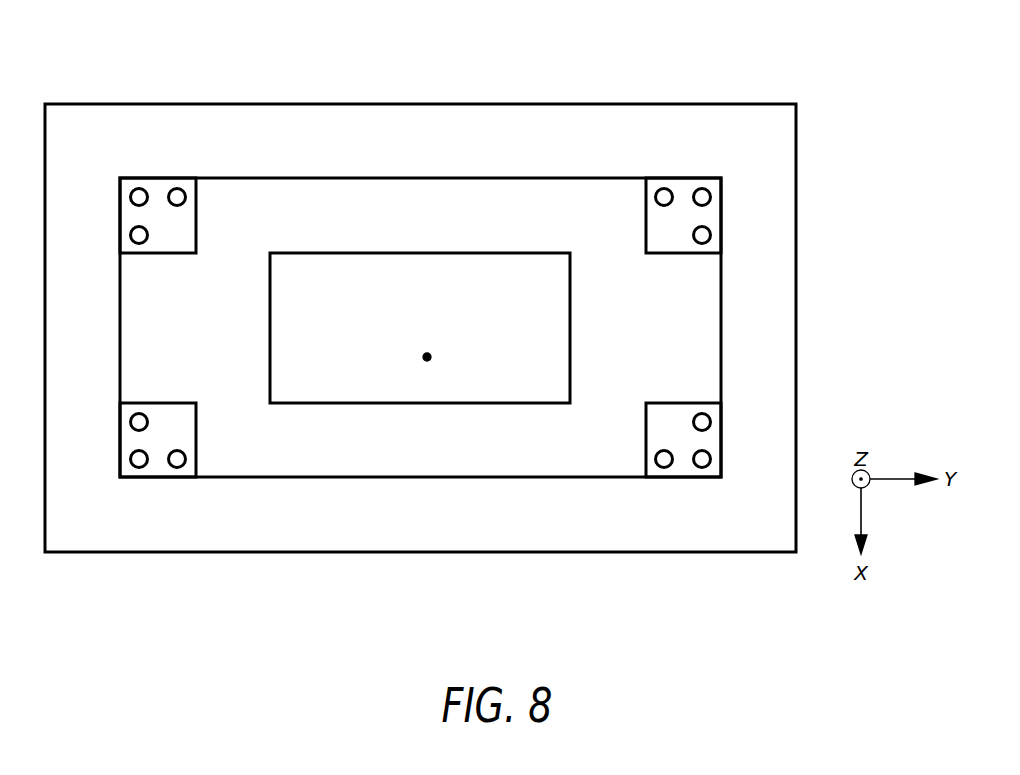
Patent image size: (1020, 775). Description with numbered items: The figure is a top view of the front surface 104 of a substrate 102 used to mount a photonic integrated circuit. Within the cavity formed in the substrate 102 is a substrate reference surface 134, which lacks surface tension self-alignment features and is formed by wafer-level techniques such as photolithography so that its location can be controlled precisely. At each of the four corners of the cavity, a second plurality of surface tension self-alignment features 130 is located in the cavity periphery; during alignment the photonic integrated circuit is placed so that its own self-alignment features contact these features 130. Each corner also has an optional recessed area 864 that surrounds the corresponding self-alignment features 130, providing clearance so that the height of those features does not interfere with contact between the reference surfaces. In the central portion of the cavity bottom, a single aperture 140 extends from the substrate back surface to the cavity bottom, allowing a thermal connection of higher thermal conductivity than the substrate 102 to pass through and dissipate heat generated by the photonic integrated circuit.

The substrate 102 is at (422, 103).
The substrate front surface 104 is at (401, 154).
The substrate reference surface 134 is at (401, 229).
The recessed area 864 is at (155, 254).
The second plurality of surface tension self-alignment features 130 is at (177, 188).
The aperture 140 is at (427, 361).